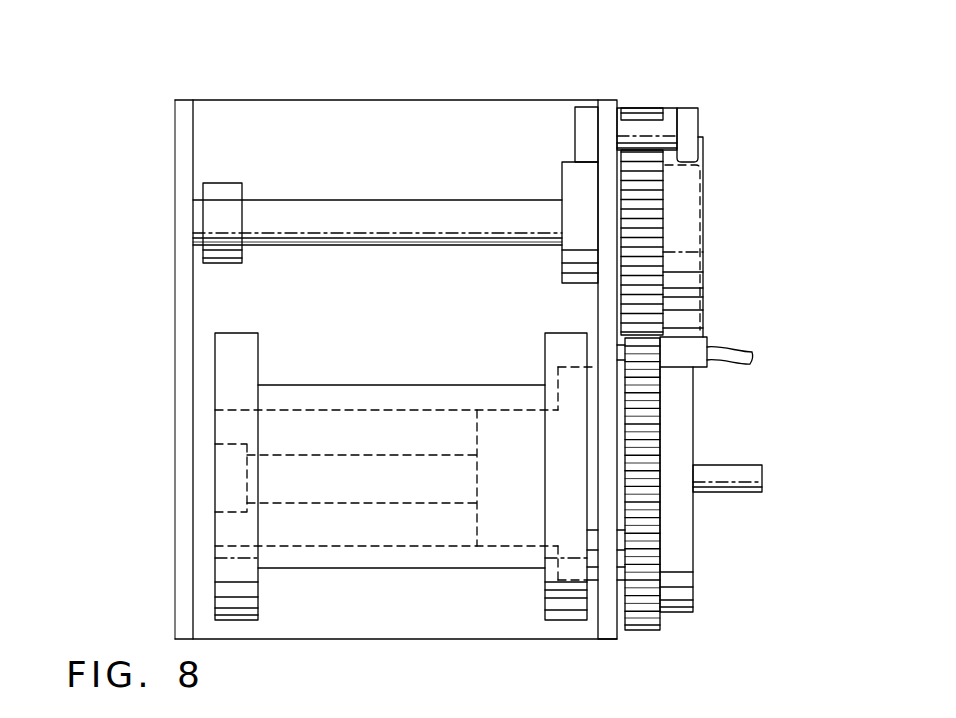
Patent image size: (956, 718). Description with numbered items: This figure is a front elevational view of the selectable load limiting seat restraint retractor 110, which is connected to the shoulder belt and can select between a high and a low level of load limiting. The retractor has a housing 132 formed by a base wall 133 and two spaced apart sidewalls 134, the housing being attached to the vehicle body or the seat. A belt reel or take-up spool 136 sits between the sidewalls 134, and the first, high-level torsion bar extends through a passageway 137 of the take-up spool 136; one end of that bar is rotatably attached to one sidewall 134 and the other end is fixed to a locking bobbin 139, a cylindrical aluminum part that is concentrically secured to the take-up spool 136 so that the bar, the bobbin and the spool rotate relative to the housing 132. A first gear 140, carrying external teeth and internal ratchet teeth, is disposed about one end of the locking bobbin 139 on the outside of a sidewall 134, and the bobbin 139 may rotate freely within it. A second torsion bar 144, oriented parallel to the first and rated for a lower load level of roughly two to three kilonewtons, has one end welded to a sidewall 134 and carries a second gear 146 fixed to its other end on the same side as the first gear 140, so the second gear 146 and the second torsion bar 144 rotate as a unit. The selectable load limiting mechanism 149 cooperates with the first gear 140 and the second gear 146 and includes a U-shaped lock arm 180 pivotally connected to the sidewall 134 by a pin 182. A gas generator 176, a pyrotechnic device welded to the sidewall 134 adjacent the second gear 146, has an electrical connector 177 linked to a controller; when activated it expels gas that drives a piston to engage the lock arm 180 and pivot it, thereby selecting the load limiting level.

The selectable load limiting seat restraint retractor 110 is at (810, 121).
The housing 132 is at (175, 100).
The base wall 133 is at (419, 122).
The sidewalls 134 is at (183, 158).
The second torsion bar 144 is at (322, 203).
The take-up spool 136 is at (461, 557).
The passageway 137 is at (335, 543).
The locking bobbin 139 is at (593, 582).
The first gear 140 is at (662, 617).
The second gear 146 is at (665, 205).
The selectable load limiting mechanism 149 is at (706, 122).
The gas generator 176 is at (690, 318).
The electrical connector 177 is at (703, 358).
The lock arm 180 is at (700, 117).
The pin 182 is at (648, 125).